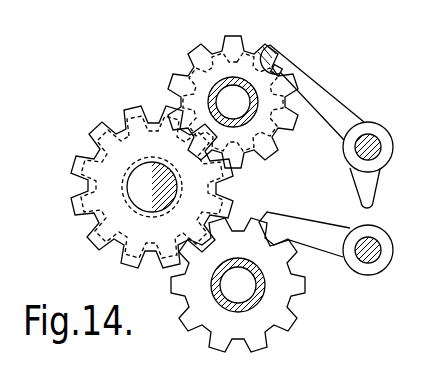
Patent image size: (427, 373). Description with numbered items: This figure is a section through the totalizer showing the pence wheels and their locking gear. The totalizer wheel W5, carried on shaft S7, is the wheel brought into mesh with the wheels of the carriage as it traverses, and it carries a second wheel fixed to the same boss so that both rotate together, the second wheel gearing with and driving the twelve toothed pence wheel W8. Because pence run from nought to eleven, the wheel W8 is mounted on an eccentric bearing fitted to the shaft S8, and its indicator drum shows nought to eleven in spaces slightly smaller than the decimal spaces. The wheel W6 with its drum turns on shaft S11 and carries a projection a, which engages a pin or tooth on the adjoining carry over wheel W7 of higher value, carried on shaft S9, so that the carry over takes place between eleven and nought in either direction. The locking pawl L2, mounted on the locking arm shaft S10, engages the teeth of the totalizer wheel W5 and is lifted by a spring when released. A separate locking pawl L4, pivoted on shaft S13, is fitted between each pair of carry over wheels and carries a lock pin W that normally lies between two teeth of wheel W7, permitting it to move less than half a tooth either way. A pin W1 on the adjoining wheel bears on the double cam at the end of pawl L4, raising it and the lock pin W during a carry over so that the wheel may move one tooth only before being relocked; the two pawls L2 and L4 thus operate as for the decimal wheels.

The wheel W6 is at (147, 118).
The twelve toothed wheel W8 is at (132, 260).
The shaft S11 is at (152, 187).
The shaft S8 is at (175, 205).
The projection a is at (190, 128).
The pin W1 is at (268, 62).
The lock pin W is at (277, 72).
The carry over wheel W7 is at (287, 128).
The shaft S9 is at (233, 102).
The locking pawl L4 is at (318, 95).
The shaft S13 is at (368, 136).
The locking pawl L2 is at (293, 225).
The shaft S10 is at (370, 260).
The totalizer wheel W5 is at (290, 322).
The shaft S7 is at (238, 285).